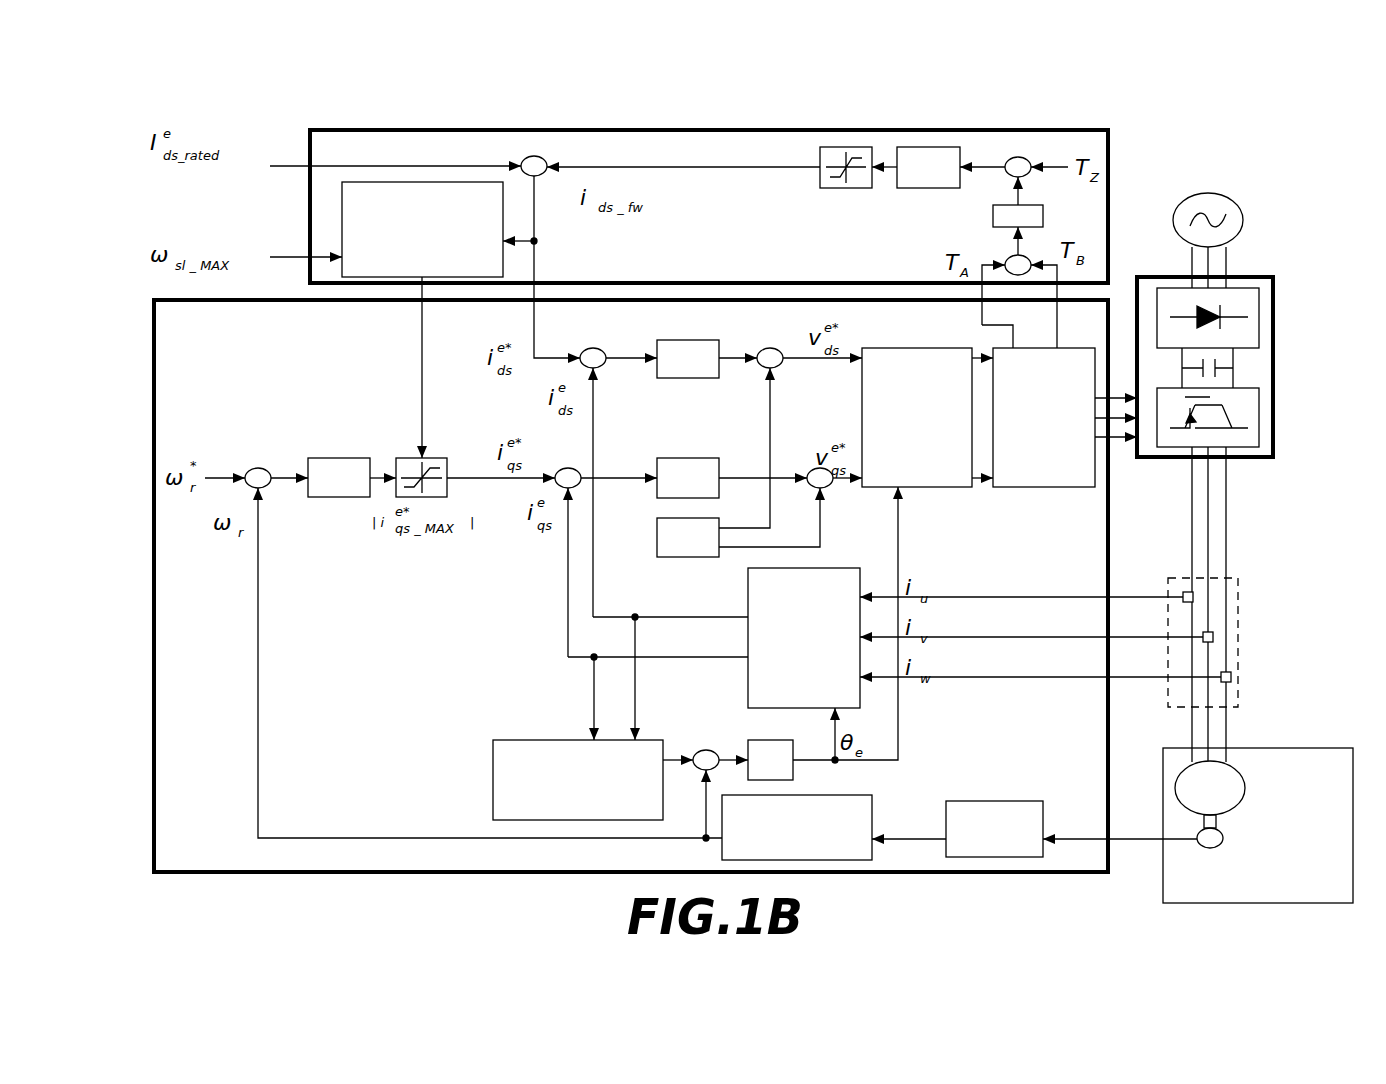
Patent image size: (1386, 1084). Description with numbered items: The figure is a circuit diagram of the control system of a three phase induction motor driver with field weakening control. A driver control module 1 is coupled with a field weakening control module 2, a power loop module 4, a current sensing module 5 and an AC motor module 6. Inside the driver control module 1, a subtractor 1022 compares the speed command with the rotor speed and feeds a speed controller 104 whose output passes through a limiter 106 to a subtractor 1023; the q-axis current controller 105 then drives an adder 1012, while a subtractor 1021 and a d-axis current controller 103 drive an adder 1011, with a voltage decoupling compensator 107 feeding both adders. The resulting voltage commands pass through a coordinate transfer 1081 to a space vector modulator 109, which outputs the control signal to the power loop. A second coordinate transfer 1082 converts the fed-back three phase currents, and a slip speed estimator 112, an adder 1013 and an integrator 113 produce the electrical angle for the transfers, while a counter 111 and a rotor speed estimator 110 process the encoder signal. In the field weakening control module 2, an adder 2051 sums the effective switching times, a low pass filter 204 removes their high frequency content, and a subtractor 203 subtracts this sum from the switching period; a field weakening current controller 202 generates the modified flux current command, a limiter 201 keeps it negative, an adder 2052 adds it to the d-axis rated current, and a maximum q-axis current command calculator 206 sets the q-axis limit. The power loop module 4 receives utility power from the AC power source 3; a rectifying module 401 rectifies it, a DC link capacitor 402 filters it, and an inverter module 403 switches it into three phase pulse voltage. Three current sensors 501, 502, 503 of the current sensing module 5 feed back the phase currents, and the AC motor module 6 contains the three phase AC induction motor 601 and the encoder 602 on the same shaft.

The driver control module 1 is at (154, 305).
The field weakening control module 2 is at (387, 130).
The AC power source 3 is at (1238, 202).
The power loop module 4 is at (1245, 460).
The current sensing module 5 is at (1183, 578).
The AC motor module 6 is at (1262, 748).
The d-axis current controller 103 is at (690, 378).
The speed controller 104 is at (350, 497).
The q-axis current controller 105 is at (690, 458).
The limiter 106 is at (415, 458).
The voltage decoupling compensator 107 is at (657, 557).
The space vector modulator 109 is at (995, 487).
The rotor speed estimator 110 is at (852, 792).
The counter 111 is at (1003, 801).
The slip speed estimator 112 is at (565, 740).
The integrator 113 is at (780, 740).
The limiter 201 is at (831, 147).
The field weakening current controller 202 is at (917, 147).
The subtractor 203 is at (1009, 158).
The low pass filter 204 is at (993, 214).
The maximum q-axis current command calculator 206 is at (412, 182).
The rectifying module 401 is at (1262, 306).
The DC link capacitor 402 is at (1215, 366).
The inverter module 403 is at (1262, 408).
The current sensor 501 is at (1195, 592).
The current sensor 502 is at (1212, 632).
The current sensor 503 is at (1230, 672).
The three phase AC induction motor 601 is at (1237, 803).
The encoder 602 is at (1220, 846).
The adder 1011 is at (768, 348).
The adder 1012 is at (808, 470).
The adder 1013 is at (705, 748).
The subtractor 1021 is at (595, 348).
The subtractor 1022 is at (258, 468).
The subtractor 1023 is at (570, 468).
The coordinate transfer 1081 is at (920, 487).
The coordinate transfer 1082 is at (858, 555).
The adder 2051 is at (1008, 257).
The adder 2052 is at (540, 156).